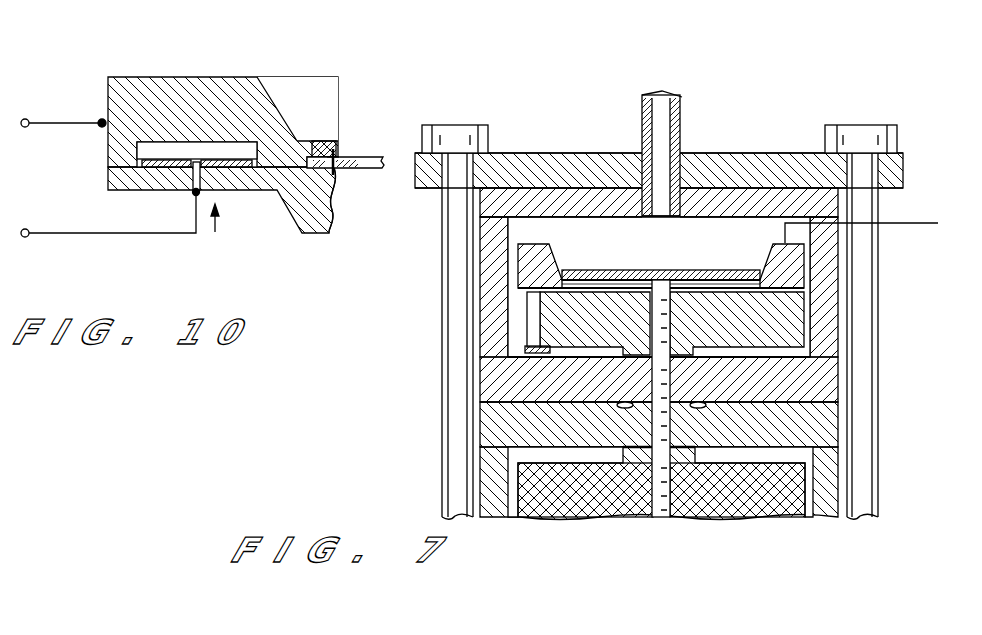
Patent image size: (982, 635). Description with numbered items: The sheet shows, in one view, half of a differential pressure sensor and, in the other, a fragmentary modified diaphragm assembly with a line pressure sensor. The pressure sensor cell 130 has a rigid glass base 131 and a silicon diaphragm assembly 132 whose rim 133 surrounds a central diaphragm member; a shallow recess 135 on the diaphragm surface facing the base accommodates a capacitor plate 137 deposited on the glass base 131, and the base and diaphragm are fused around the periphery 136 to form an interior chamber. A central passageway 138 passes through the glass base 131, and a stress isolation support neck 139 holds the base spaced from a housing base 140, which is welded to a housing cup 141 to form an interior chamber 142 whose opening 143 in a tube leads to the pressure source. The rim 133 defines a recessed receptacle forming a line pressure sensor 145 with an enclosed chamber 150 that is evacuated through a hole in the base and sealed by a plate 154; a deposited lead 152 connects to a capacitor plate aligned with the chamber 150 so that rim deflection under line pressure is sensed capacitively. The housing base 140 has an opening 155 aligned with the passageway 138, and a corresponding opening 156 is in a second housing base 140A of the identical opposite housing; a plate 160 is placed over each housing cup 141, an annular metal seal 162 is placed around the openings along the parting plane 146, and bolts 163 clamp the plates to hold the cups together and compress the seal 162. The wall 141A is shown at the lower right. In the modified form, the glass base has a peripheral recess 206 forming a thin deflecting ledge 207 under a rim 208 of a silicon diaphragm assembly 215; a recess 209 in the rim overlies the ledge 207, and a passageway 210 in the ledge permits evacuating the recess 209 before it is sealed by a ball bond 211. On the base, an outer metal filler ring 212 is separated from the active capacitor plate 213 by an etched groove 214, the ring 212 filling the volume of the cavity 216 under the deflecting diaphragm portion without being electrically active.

In FIG. 7, the pressure sensor cell 130 is at (814, 256).
In FIG. 7, the glass base 131 is at (810, 325).
In FIG. 7, the diaphragm assembly 132 is at (500, 258).
In FIG. 7, the rim 133 is at (485, 245).
In FIG. 7, the shallow recess 135 is at (766, 280).
In FIG. 7, the fused periphery 136 is at (766, 286).
In FIG. 7, the capacitor plate 137 is at (673, 301).
In FIG. 7, the central aperture or passageway 138 is at (672, 322).
In FIG. 7, the stress isolation support neck 139 is at (604, 362).
In FIG. 7, the housing base 140 is at (823, 388).
In FIG. 7, the second housing base 140A is at (825, 432).
In FIG. 7, the housing cup 141 is at (830, 300).
In FIG. 7, the lower wall 141A is at (822, 493).
In FIG. 7, the interior chamber 142 is at (803, 353).
In FIG. 7, the opening 143 is at (657, 115).
In FIG. 7, the line pressure sensor 145 is at (519, 283).
In FIG. 7, the parting plane 146 is at (500, 405).
In FIG. 7, the enclosed chamber 150 is at (522, 308).
In FIG. 7, the deposited lead 152 is at (520, 350).
In FIG. 7, the plate 154 is at (552, 347).
In FIG. 7, the opening 155 is at (613, 403).
In FIG. 7, the opening 156 is at (650, 428).
In FIG. 7, the plate 160 is at (502, 163).
In FIG. 7, the annular metal gasket or seal 162 is at (706, 409).
In FIG. 7, the bolts or cap screws 163 is at (862, 140).
In FIG. 10, the peripheral recess 206 is at (215, 236).
In FIG. 10, the deflecting ledge 207 is at (122, 177).
In FIG. 10, the rim 208 is at (205, 98).
In FIG. 10, the recess 209 is at (137, 155).
In FIG. 10, the passageway 210 is at (200, 173).
In FIG. 10, the ball bond 211 is at (192, 195).
In FIG. 10, the outer metal filler ring 212 is at (320, 143).
In FIG. 10, the capacitor plate 213 is at (352, 157).
In FIG. 10, the etched groove 214 is at (335, 193).
In FIG. 10, the diaphragm assembly 215 is at (330, 147).
In FIG. 10, the cavity 216 is at (343, 155).